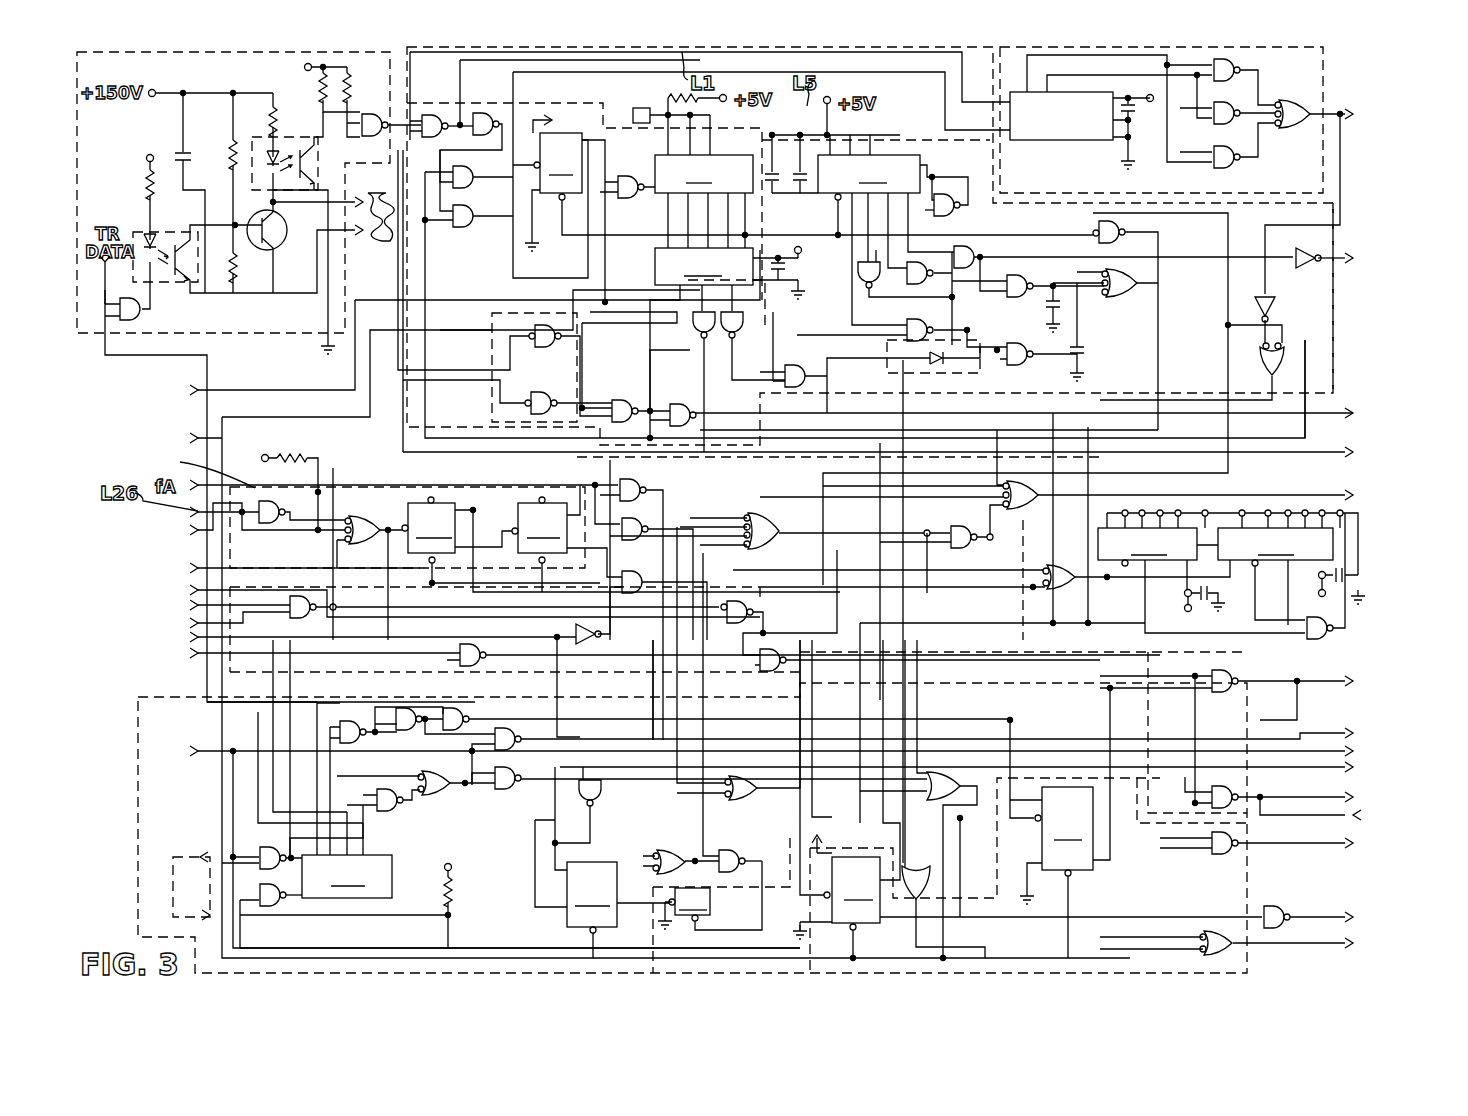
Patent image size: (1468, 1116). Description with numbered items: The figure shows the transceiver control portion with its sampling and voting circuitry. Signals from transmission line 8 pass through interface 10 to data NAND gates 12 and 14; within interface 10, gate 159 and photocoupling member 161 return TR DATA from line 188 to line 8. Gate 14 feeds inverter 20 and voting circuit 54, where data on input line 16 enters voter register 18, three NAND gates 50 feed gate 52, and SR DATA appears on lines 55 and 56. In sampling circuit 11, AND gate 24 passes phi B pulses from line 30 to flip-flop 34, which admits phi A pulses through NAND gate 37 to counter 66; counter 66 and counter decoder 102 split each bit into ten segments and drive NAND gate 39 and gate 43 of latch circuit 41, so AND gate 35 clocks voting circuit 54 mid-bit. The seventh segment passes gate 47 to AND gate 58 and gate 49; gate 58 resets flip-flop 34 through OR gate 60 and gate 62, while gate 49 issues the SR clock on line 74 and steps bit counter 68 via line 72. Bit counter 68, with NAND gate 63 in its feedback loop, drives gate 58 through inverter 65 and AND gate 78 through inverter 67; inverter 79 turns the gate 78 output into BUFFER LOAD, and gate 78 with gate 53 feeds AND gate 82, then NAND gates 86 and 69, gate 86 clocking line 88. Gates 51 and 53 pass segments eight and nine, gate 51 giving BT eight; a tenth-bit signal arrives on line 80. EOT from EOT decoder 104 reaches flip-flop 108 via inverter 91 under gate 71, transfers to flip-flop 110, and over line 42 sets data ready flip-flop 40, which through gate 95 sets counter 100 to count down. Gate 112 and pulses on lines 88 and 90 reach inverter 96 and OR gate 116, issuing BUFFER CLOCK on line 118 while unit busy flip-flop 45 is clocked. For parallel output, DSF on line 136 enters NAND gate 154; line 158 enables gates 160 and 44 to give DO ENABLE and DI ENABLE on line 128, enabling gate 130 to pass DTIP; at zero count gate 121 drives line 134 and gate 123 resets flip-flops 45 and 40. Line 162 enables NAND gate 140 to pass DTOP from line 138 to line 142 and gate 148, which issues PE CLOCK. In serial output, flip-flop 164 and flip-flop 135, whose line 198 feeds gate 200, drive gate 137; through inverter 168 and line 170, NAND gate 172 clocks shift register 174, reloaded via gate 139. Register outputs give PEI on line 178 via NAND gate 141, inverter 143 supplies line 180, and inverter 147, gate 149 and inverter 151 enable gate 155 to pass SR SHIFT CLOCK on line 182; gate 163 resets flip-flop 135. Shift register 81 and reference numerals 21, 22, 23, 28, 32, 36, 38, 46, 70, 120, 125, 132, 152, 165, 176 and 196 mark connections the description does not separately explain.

The transmission line 8 is at (385, 184).
The interface 10 is at (196, 58).
The sampling circuit 11 is at (726, 126).
The data NAND gate 12 is at (370, 117).
The data NAND gate 14 is at (430, 112).
The input line 16 is at (626, 60).
The voter register 18 is at (1052, 143).
The inverter 20 is at (473, 112).
The output control circuit 21 is at (1248, 880).
The line 22 is at (472, 148).
The data transfer control circuit 23 is at (138, 802).
The AND gate 24 is at (461, 226).
The phase B line 28 is at (642, 624).
The line 30 is at (326, 456).
The gate circuit 32 is at (491, 405).
The flip-flop 34 is at (635, 205).
The AND gate 35 is at (472, 186).
The line 36 is at (586, 270).
The NAND gate 37 is at (614, 182).
The line 38 is at (1074, 889).
The NAND gate 39 is at (528, 328).
The data ready flip-flop 40 is at (1061, 822).
The latch circuit 41 is at (488, 328).
The line 42 is at (1115, 819).
The gate 43 is at (488, 403).
The gate 44 is at (1244, 809).
The unit busy flip-flop 45 is at (846, 898).
The NAND gate 46 is at (1218, 854).
The gate 47 is at (611, 408).
The gate 49 is at (665, 412).
The NAND gates 50 is at (1238, 172).
The gate 51 is at (690, 349).
The gate 52 is at (1282, 104).
The gate 53 is at (738, 337).
The voting circuit 54 is at (1328, 80).
The line 55 is at (1365, 140).
The line 56 is at (1319, 214).
The AND gate 58 is at (952, 328).
The OR gate 60 is at (1136, 294).
The gate 62 is at (1126, 232).
The NAND gate 63 is at (952, 218).
The inverter 65 is at (905, 275).
The counter 66 is at (701, 143).
The inverter 67 is at (920, 283).
The bit counter 68 is at (869, 214).
The NAND gate 69 is at (1016, 278).
The phase A line 70 is at (216, 386).
The gate 71 is at (340, 531).
The line 72 is at (833, 388).
The line 74 is at (1348, 411).
The AND gate 78 is at (978, 252).
The inverter 79 is at (1302, 267).
The line 80 is at (788, 362).
The shift register 81 is at (1188, 254).
The AND gate 82 is at (796, 386).
The NAND gate 86 is at (1002, 375).
The line 88 is at (506, 458).
The line 90 is at (777, 545).
The inverter 91 is at (286, 500).
The gate 95 is at (1054, 570).
The inverter 96 is at (963, 552).
The counter 100 is at (1228, 571).
The counter decoder 102 is at (646, 240).
The EOT decoder 104 is at (240, 491).
The flip-flop 108 is at (434, 576).
The flip-flop 110 is at (470, 508).
The gate 112 is at (615, 519).
The OR gate 116 is at (1036, 491).
The line 118 is at (1298, 491).
The inverter 120 is at (624, 626).
The gate 121 is at (1334, 617).
The gate 123 is at (958, 783).
The input circuit 125 is at (182, 672).
The line 128 is at (1027, 710).
The gate 130 is at (488, 650).
The NAND gate 132 is at (702, 644).
The line 134 is at (1397, 643).
The flip-flop 135 is at (708, 920).
The line 136 is at (384, 670).
The gate 137 is at (652, 848).
The line 138 is at (256, 594).
The gate 139 is at (254, 859).
The NAND gate 140 is at (280, 620).
The NAND gate 141 is at (398, 731).
The line 142 is at (352, 606).
The inverter 143 is at (469, 718).
The inverter 147 is at (356, 724).
The gate 148 is at (737, 798).
The gate 149 is at (493, 749).
The inverter 151 is at (390, 806).
The line 152 is at (319, 670).
The NAND gate 154 is at (742, 602).
The gate 155 is at (484, 790).
The line 158 is at (986, 642).
The gate 159 is at (143, 314).
The gate 160 is at (1232, 673).
The photocoupling member 161 is at (147, 215).
The line 162 is at (1304, 714).
The gate 163 is at (938, 864).
The flip-flop 164 is at (653, 860).
The NAND gate 165 is at (1298, 920).
The inverter 168 is at (720, 852).
The line 170 is at (351, 946).
The NAND gate 172 is at (266, 904).
The shift register 174 is at (377, 829).
The gate circuit 176 is at (471, 845).
The line 178 is at (563, 725).
The line 180 is at (542, 740).
The line 182 is at (576, 786).
The line 188 is at (106, 292).
The line 196 is at (716, 886).
The line 198 is at (1307, 430).
The gate 200 is at (1297, 362).